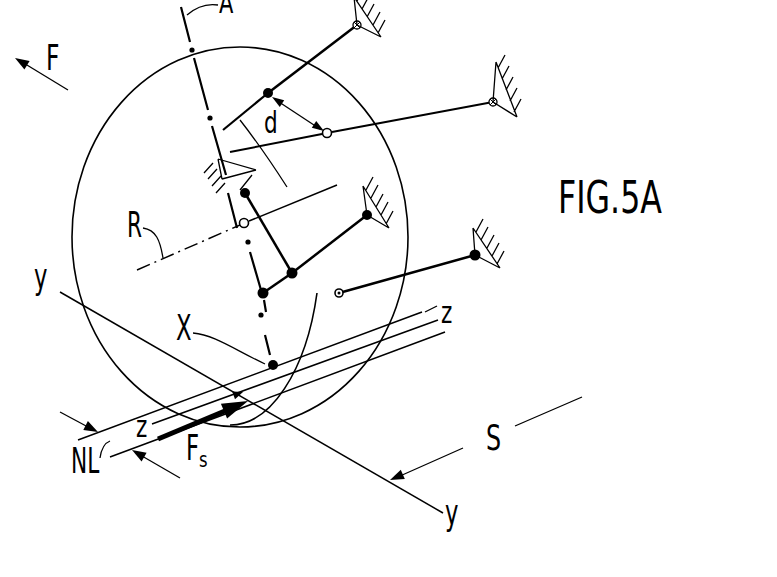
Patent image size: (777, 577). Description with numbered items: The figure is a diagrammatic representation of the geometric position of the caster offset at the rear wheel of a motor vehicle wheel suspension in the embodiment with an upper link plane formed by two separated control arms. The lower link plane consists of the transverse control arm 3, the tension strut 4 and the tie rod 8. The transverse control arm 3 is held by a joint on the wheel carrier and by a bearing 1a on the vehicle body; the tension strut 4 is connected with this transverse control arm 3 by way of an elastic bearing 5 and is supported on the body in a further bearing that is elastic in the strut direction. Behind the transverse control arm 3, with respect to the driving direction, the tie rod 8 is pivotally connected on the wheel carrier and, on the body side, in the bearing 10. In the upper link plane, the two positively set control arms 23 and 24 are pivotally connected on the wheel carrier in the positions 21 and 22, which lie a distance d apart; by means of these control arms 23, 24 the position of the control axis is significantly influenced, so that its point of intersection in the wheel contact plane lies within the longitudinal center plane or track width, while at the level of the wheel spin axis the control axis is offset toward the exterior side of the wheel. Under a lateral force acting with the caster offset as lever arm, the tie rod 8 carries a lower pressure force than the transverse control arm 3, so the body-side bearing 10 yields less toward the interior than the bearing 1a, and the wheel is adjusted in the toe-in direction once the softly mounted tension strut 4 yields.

The bearing 1a is at (384, 188).
The transverse control arm 3 is at (326, 245).
The tension strut 4 is at (267, 233).
The elastic bearing 5 is at (296, 276).
The tie rod 8 is at (438, 262).
The bearing 10 is at (478, 262).
The position 21 is at (270, 88).
The position 22 is at (333, 128).
The control arm 23 is at (334, 42).
The control arm 24 is at (443, 110).